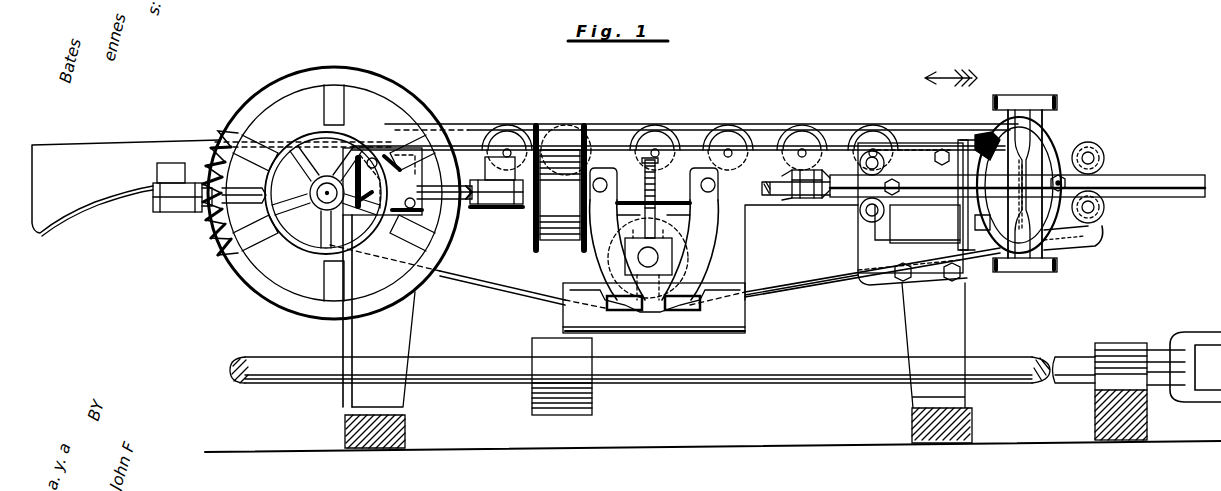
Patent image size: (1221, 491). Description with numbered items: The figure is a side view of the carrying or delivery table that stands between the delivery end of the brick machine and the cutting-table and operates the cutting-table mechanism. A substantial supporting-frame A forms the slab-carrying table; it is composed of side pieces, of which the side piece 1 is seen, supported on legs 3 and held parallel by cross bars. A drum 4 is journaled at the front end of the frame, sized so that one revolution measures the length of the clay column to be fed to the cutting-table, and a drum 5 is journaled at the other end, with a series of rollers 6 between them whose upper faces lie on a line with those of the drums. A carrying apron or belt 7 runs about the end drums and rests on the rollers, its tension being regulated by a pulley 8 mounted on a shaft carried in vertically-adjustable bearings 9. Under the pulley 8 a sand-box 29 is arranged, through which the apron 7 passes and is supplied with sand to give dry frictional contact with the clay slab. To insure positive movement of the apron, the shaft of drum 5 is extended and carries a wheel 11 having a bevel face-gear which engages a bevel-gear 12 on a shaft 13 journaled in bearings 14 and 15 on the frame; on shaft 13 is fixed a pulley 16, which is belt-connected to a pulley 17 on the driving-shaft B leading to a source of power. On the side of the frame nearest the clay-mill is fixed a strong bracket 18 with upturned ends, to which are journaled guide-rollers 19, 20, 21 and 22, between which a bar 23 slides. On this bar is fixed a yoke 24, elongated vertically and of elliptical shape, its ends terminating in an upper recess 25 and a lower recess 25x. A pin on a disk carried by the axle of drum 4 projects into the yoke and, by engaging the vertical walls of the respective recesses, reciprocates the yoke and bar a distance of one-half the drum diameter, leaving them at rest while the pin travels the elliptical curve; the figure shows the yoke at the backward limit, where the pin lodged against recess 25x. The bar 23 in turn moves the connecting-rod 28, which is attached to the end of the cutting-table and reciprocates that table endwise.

The side piece 1 is at (836, 153).
The legs 3 is at (658, 365).
The drum 4 is at (978, 136).
The drum 5 is at (333, 140).
The rollers 6 is at (645, 142).
The carrying apron or belt 7 is at (797, 124).
The pulley 8 is at (700, 251).
The vertically-adjustable bearing 9 is at (625, 258).
The wheel 11 is at (229, 110).
The bevel-gear 12 is at (206, 208).
The shaft 13 is at (237, 205).
The bearing 14 is at (153, 205).
The bearing 15 is at (520, 216).
The pulley 16 is at (563, 187).
The pulley 17 is at (562, 376).
The bracket 18 is at (1076, 248).
The guide-roller 19 is at (854, 221).
The guide-roller 20 is at (862, 218).
The guide-roller 21 is at (1106, 157).
The guide-roller 22 is at (1106, 207).
The bar 23 is at (1017, 173).
The yoke 24 is at (1052, 150).
The recess 25 is at (1019, 122).
The recess 25x is at (1020, 250).
The connecting-rod 28 is at (776, 200).
The sand-box 29 is at (654, 308).
The supporting-frame A is at (448, 336).
The driving-shaft B is at (728, 382).